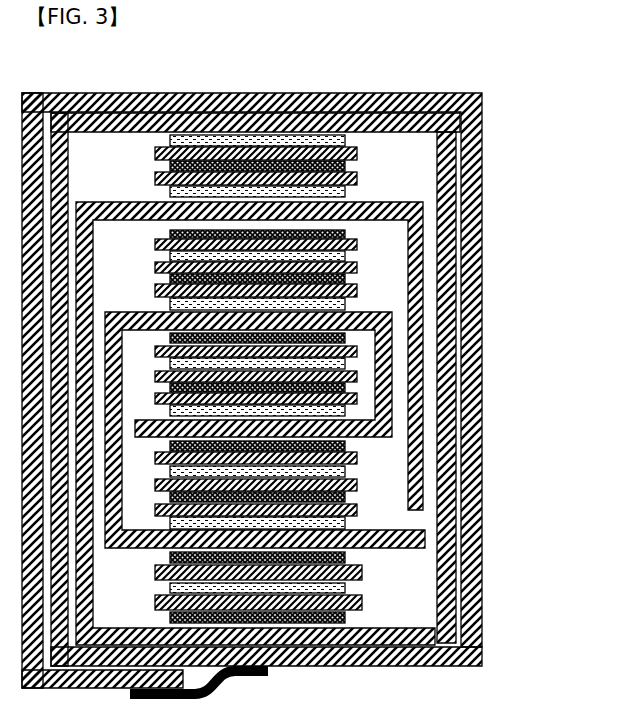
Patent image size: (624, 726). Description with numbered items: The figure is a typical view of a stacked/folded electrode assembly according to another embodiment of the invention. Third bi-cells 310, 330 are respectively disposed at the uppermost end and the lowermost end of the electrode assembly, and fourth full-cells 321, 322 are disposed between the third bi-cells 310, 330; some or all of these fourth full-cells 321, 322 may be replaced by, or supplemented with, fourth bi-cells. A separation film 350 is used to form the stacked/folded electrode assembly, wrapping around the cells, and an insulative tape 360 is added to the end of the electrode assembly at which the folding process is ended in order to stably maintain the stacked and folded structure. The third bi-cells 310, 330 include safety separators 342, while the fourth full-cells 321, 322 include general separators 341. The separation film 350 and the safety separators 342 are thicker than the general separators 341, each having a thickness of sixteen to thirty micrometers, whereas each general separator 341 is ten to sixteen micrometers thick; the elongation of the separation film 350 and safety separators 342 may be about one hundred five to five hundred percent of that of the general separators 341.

The third bi-cell 310 is at (380, 168).
The fourth full-cell 321 is at (376, 361).
The fourth full-cell 322 is at (383, 276).
The third bi-cell 330 is at (376, 587).
The general separator 341 is at (357, 350).
The safety separator 342 is at (362, 602).
The separation film 350 is at (437, 657).
The insulative tape 360 is at (243, 677).